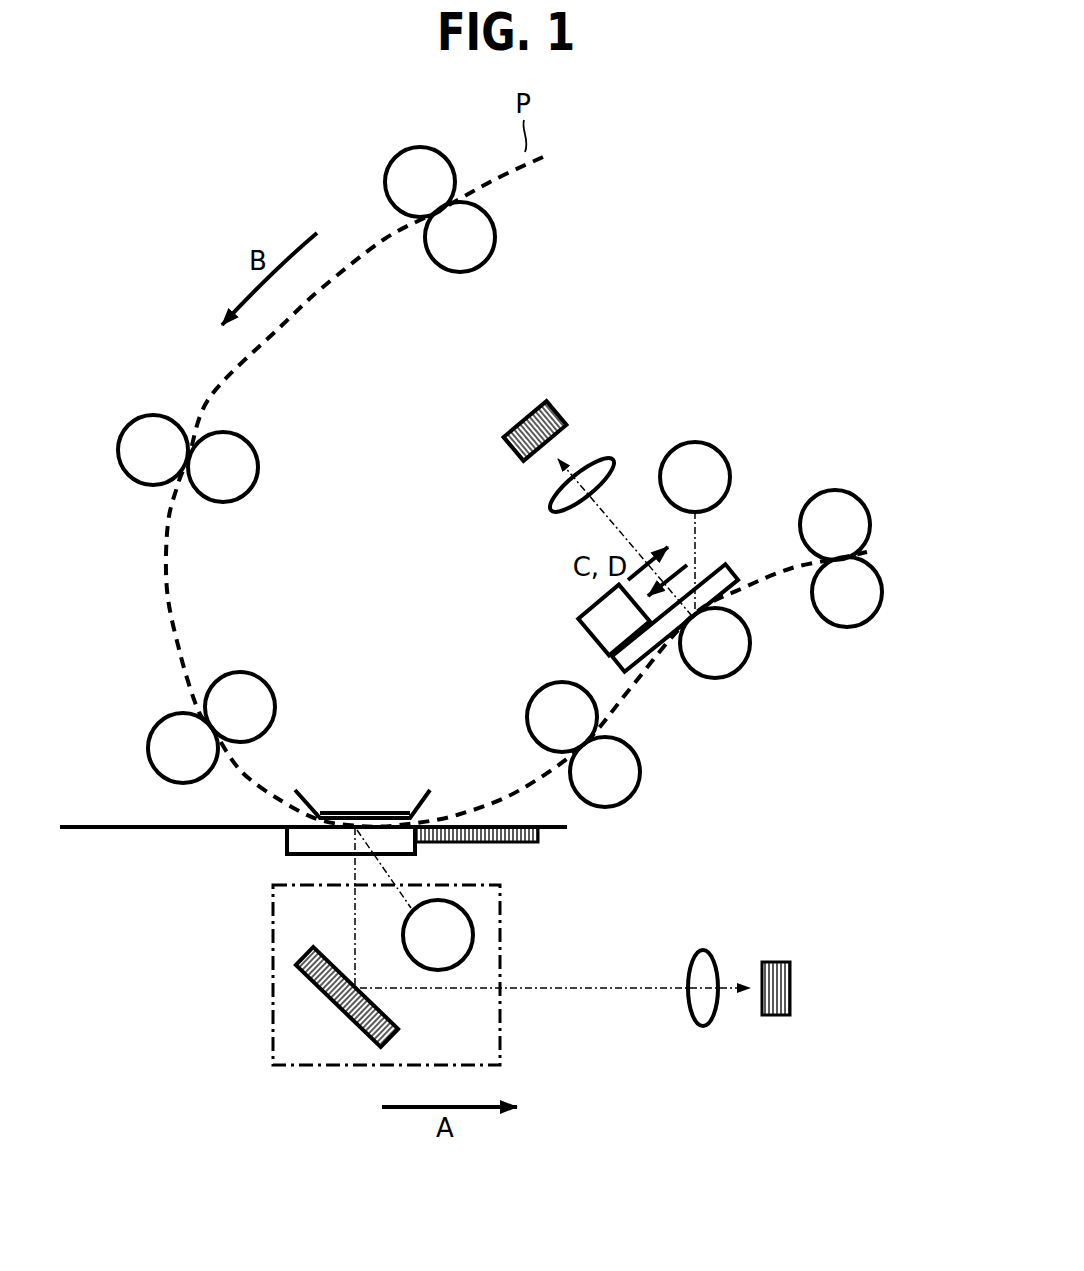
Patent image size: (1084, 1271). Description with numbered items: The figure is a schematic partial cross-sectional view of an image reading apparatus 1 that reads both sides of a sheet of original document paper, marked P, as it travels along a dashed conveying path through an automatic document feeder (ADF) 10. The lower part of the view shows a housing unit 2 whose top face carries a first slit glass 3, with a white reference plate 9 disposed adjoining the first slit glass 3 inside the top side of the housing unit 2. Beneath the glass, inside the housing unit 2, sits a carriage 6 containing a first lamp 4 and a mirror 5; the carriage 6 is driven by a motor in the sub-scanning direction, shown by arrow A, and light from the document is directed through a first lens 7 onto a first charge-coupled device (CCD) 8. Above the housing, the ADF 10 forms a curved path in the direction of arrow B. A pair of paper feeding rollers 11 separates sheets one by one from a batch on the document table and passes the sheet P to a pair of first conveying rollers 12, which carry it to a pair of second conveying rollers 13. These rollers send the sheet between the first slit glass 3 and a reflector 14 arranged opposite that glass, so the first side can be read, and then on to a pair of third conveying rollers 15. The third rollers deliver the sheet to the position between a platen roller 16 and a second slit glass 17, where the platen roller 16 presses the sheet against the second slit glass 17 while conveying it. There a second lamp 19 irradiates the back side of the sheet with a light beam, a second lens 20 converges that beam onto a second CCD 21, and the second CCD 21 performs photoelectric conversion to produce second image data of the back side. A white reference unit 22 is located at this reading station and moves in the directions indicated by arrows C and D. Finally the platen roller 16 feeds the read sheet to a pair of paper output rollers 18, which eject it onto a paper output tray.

The image reading apparatus 1 is at (758, 238).
The housing unit 2 is at (118, 826).
The first slit glass 3 is at (290, 842).
The first lamp 4 is at (474, 935).
The mirror 5 is at (297, 966).
The carriage 6 is at (272, 1030).
The first lens 7 is at (705, 950).
The first charge-coupled device (CCD) 8 is at (791, 990).
The white reference plate 9 is at (540, 836).
The automatic document feeder (ADF) 10 is at (136, 553).
The pair of paper feeding rollers 11 is at (423, 252).
The pair of first conveying rollers 12 is at (222, 434).
The pair of second conveying rollers 13 is at (150, 743).
The reflector 14 is at (362, 811).
The pair of third conveying rollers 15 is at (640, 762).
The platen roller 16 is at (749, 660).
The second slit glass 17 is at (732, 563).
The pair of paper output rollers 18 is at (878, 580).
The second lamp 19 is at (729, 467).
The second lens 20 is at (615, 458).
The second CCD 21 is at (555, 408).
The white reference unit 22 is at (580, 610).